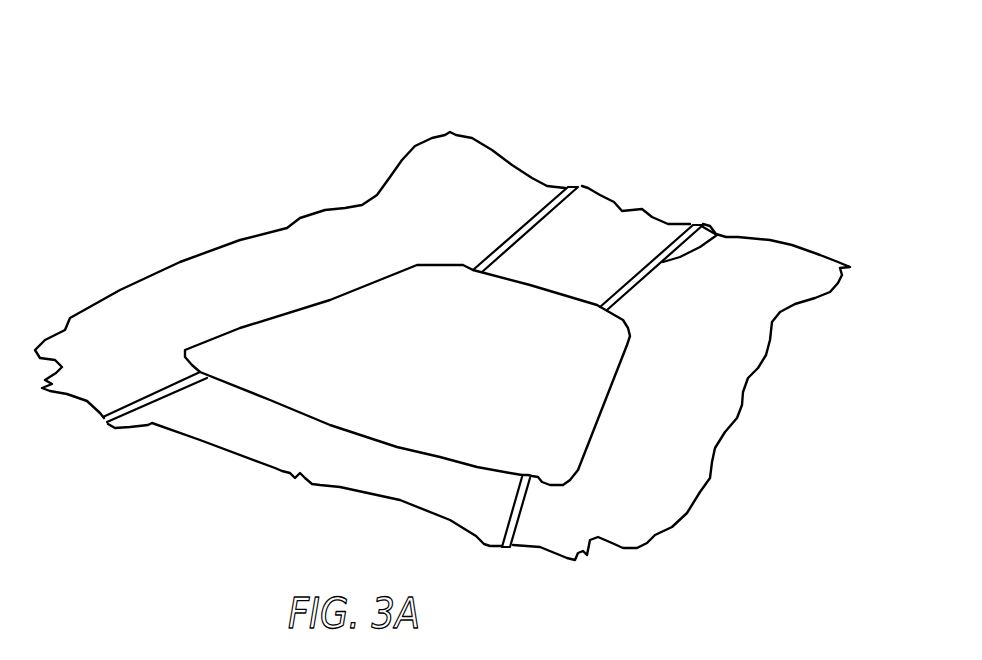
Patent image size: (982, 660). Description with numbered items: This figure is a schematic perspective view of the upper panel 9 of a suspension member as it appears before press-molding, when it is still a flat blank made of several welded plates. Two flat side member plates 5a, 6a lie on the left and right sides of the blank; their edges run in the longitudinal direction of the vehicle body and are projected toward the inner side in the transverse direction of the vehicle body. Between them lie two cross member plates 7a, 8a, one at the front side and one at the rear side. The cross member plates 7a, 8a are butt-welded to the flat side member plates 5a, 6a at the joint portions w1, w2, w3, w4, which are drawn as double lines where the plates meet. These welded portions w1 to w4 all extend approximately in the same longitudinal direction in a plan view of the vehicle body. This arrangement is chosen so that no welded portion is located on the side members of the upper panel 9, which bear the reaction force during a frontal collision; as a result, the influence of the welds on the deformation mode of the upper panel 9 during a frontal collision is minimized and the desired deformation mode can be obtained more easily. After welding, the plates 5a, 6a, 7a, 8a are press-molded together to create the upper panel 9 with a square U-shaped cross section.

The upper panel 9 is at (462, 133).
The flat side member plate 5a is at (303, 243).
The flat side member plate 6a is at (700, 404).
The cross member plate 7a is at (285, 455).
The cross member plate 8a is at (610, 235).
The joint portion w1 is at (155, 400).
The joint portion w2 is at (518, 517).
The joint portion w3 is at (522, 225).
The joint portion w4 is at (725, 237).